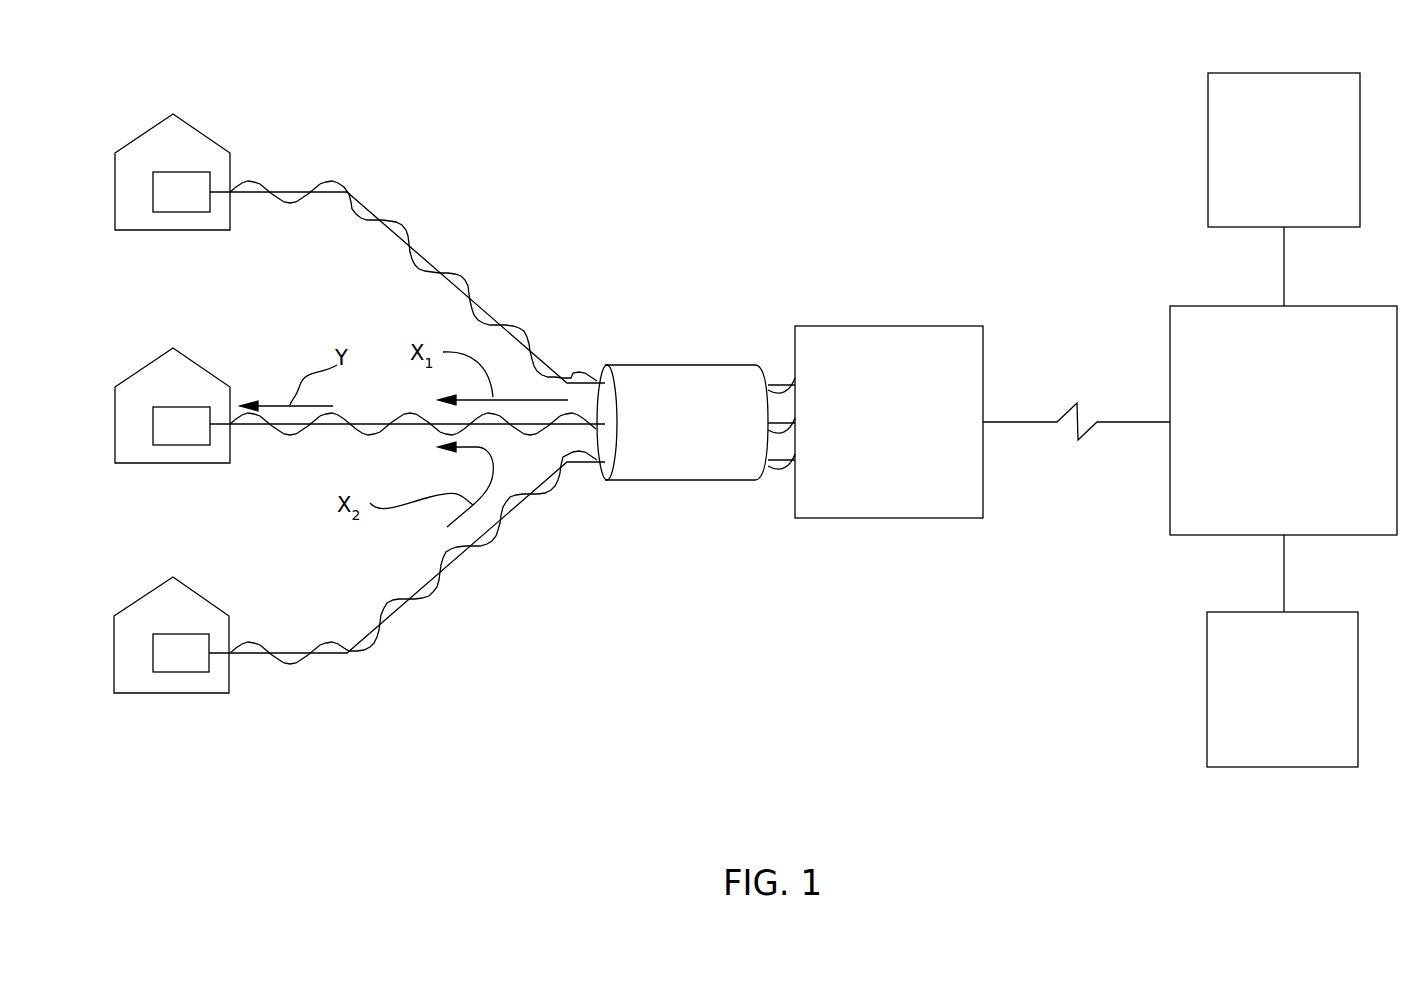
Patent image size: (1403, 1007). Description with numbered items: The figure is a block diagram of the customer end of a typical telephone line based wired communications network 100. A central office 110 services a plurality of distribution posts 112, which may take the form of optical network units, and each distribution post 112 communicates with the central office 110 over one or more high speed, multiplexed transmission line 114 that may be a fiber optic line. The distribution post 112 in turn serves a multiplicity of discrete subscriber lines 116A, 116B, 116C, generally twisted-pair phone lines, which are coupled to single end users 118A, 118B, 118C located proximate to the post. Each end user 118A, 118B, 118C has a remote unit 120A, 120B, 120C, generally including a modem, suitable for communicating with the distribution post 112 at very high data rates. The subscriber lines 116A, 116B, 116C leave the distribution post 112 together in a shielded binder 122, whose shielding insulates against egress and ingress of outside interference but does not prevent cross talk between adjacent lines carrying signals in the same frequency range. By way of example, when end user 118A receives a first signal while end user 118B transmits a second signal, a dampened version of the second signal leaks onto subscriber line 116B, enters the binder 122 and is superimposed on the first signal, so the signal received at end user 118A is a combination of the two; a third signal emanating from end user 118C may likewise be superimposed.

The wired communications network 100 is at (683, 95).
The central office 110 is at (1200, 497).
The distribution post 112 is at (890, 497).
The transmission line 114 is at (1037, 422).
The subscriber line 116A is at (327, 426).
The subscriber line 116B is at (470, 545).
The subscriber line 116C is at (400, 233).
The end user 118A is at (136, 387).
The end user 118B is at (133, 625).
The end user 118C is at (187, 138).
The remote unit 120A is at (182, 435).
The remote unit 120B is at (182, 663).
The remote unit 120C is at (183, 200).
The shielded binder 122 is at (682, 385).